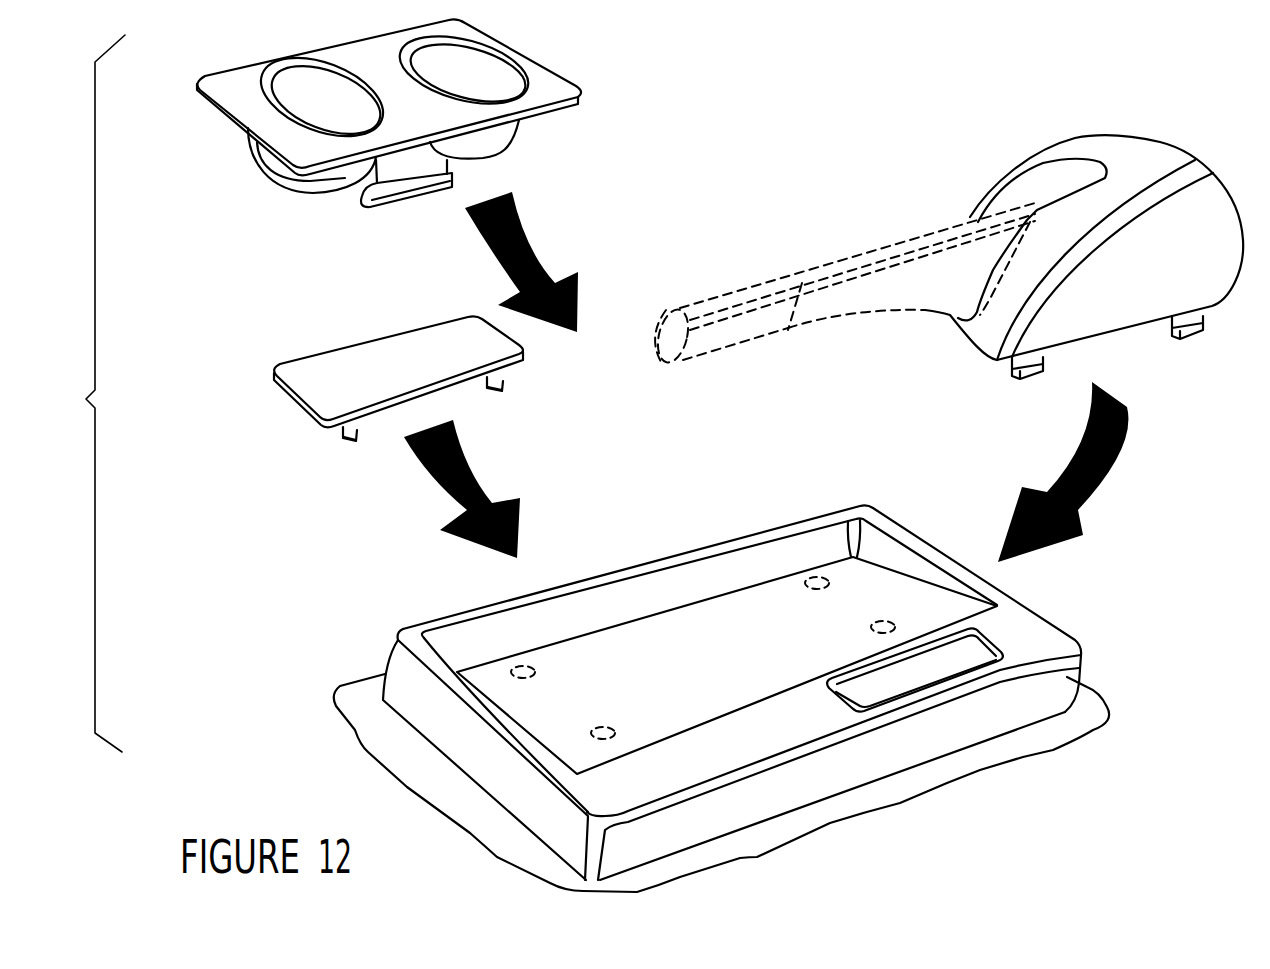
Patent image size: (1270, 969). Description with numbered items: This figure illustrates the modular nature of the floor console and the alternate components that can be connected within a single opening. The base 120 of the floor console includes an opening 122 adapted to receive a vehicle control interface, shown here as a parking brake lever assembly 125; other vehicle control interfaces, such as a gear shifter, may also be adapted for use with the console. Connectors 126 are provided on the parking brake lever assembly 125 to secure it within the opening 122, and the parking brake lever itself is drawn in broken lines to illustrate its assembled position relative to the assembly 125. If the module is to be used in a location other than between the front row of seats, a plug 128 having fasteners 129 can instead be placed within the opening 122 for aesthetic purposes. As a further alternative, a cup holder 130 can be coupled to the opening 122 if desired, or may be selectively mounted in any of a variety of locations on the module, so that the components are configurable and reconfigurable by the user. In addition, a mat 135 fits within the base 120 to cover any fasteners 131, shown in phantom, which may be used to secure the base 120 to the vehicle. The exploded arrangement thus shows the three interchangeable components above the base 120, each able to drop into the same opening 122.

The base 120 is at (721, 683).
The opening 122 is at (987, 643).
The parking brake lever assembly 125 is at (948, 279).
The connectors 126 is at (1018, 380).
The plug 128 is at (391, 354).
The fasteners 129 is at (310, 370).
The cup holder 130 is at (533, 67).
The fasteners 131 is at (534, 668).
The mat 135 is at (778, 643).